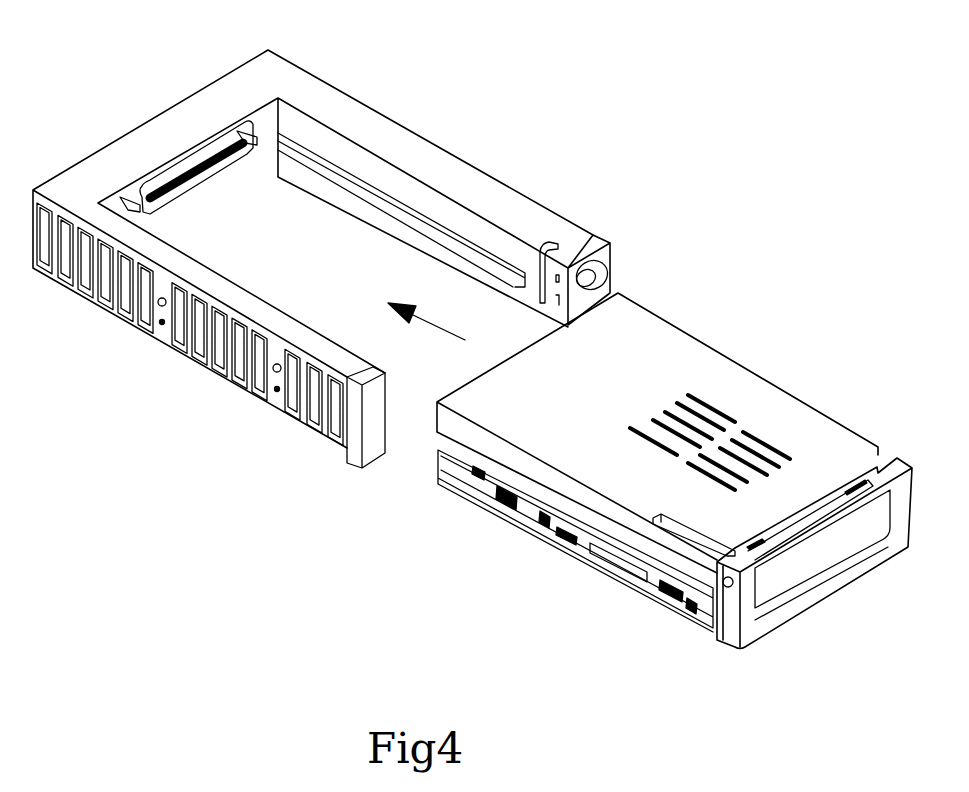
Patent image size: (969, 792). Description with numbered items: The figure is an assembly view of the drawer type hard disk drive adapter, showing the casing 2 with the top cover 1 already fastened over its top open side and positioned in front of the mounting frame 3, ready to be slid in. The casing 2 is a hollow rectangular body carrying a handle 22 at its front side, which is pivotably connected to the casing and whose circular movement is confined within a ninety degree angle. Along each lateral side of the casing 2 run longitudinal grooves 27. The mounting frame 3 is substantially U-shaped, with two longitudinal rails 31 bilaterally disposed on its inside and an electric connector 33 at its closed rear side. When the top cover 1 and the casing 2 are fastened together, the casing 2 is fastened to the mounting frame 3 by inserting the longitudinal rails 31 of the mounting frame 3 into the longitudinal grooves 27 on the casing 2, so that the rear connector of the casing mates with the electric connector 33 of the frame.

The top cover 1 is at (723, 360).
The casing 2 is at (492, 510).
The mounting frame 3 is at (355, 108).
The handle 22 is at (757, 628).
The longitudinal grooves 27 is at (602, 528).
The longitudinal rails 31 is at (435, 232).
The electric connector 33 is at (202, 174).